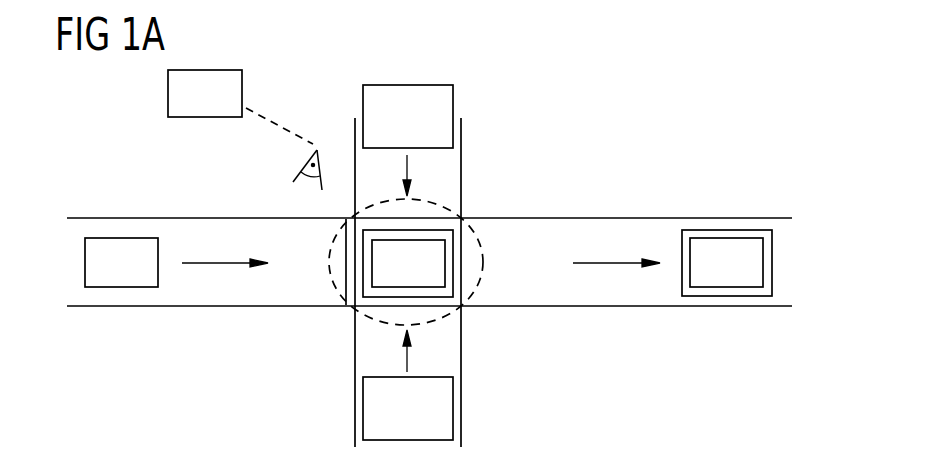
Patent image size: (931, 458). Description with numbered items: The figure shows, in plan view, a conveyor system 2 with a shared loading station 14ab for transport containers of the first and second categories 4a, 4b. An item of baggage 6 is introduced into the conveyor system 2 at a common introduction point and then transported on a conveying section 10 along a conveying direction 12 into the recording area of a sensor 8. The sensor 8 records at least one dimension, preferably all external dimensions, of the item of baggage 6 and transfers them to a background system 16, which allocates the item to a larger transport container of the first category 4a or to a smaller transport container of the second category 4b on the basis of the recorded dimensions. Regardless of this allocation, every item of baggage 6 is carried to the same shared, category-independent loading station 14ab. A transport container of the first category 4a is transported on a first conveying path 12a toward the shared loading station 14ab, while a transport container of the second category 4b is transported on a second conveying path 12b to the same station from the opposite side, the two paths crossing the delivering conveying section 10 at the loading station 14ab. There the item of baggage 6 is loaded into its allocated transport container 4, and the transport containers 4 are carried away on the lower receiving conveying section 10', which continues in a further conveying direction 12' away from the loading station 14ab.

The conveyor system 2 is at (100, 120).
The transport containers 4 is at (453, 256).
The transport container of the first category 4a is at (453, 107).
The transport container of the second category 4b is at (453, 405).
The item of baggage 6 is at (123, 238).
The sensor 8 is at (317, 150).
The conveying section 10 is at (237, 295).
The receiving conveying section 10' is at (599, 296).
The conveying direction 12 is at (225, 221).
The downstream conveying direction 12' is at (616, 221).
The first conveying path 12a is at (407, 163).
The second conveying path 12b is at (407, 360).
The shared loading station 14ab is at (478, 238).
The background system 16 is at (242, 92).